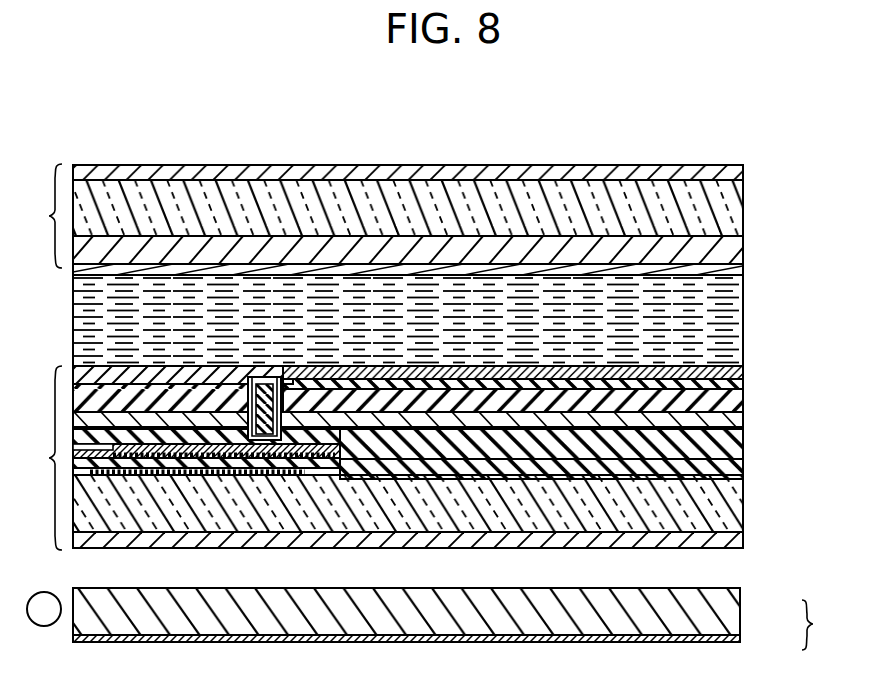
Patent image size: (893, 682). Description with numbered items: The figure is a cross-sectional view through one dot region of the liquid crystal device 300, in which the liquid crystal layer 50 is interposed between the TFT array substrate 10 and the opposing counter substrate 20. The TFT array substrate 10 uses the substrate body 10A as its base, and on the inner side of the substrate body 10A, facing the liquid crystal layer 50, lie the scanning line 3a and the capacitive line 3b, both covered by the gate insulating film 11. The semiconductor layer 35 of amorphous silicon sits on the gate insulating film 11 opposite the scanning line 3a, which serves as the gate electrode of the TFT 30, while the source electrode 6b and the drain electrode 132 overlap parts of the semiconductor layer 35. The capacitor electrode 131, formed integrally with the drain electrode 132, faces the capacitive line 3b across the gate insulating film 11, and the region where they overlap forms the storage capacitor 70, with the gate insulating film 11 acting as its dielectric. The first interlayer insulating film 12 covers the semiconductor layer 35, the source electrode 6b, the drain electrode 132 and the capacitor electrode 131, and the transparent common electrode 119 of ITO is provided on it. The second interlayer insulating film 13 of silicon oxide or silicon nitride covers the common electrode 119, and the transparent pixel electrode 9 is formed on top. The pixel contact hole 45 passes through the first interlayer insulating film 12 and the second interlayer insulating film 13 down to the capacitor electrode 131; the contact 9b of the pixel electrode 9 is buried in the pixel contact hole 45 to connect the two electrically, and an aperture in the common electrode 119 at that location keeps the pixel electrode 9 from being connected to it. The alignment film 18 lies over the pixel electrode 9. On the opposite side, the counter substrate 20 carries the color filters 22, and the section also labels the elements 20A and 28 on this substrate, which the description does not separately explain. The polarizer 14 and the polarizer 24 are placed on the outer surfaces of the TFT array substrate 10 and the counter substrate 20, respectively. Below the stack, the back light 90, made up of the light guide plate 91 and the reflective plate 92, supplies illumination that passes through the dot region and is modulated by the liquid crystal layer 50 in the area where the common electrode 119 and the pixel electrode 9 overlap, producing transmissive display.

The liquid crystal device 300 is at (673, 161).
The counter substrate 20 is at (38, 216).
The polarizer 24 is at (735, 173).
The counter substrate body 20A is at (724, 206).
The color filter 22 is at (720, 257).
The alignment film 28 is at (722, 272).
The liquid crystal layer 50 is at (744, 321).
The TFT array substrate 10 is at (38, 458).
The alignment film 18 is at (740, 381).
The pixel electrode 9 is at (388, 383).
The contact 9b is at (262, 400).
The pixel contact hole 45 is at (283, 390).
The second interlayer insulating film 13 is at (722, 402).
The common electrode 119 is at (722, 421).
The first interlayer insulating film 12 is at (716, 446).
The gate insulating film 11 is at (722, 470).
The storage capacitor 70 is at (334, 473).
The source electrode 6b is at (80, 445).
The semiconductor layer 35 is at (124, 477).
The scanning line 3a is at (186, 477).
The capacitive line 3b is at (290, 477).
The drain electrode 132 is at (208, 477).
The capacitor electrode 131 is at (308, 477).
The TFT 30 is at (96, 488).
The substrate body 10A is at (722, 508).
The polarizer 14 is at (722, 546).
The back light 90 is at (458, 619).
The light guide plate 91 is at (725, 616).
The reflective plate 92 is at (740, 641).